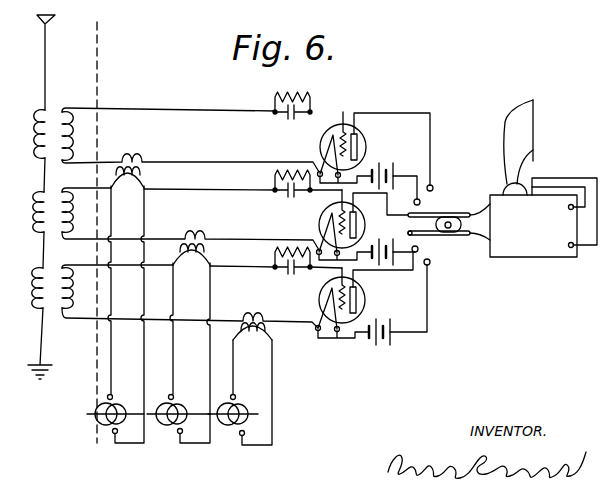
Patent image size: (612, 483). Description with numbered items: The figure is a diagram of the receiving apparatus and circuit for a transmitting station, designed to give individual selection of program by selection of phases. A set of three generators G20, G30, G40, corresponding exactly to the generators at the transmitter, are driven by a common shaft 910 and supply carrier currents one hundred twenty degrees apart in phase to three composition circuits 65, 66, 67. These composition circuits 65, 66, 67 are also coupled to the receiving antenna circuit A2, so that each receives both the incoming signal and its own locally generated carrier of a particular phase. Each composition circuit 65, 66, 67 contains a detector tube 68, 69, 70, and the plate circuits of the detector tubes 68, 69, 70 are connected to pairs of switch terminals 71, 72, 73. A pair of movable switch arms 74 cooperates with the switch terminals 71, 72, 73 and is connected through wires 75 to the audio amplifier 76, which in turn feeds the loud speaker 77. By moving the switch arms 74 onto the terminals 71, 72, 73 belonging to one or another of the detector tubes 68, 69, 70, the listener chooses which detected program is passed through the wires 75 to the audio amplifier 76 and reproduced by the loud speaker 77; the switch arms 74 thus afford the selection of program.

The receiving antenna circuit A2 is at (53, 197).
The generator G20 is at (115, 324).
The generator G30 is at (178, 362).
The generator G40 is at (240, 409).
The common shaft 910 is at (270, 370).
The composition circuit 65 is at (278, 117).
The composition circuit 66 is at (271, 202).
The composition circuit 67 is at (277, 277).
The detector tube 68 is at (320, 149).
The detector tube 69 is at (319, 217).
The detector tube 70 is at (319, 307).
The switch terminals 71 is at (420, 202).
The switch terminals 72 is at (408, 217).
The switch terminals 73 is at (418, 249).
The switch arms 74 is at (467, 236).
The wires 75 is at (483, 203).
The audio amplifier 76 is at (543, 217).
The loud speaker 77 is at (524, 129).